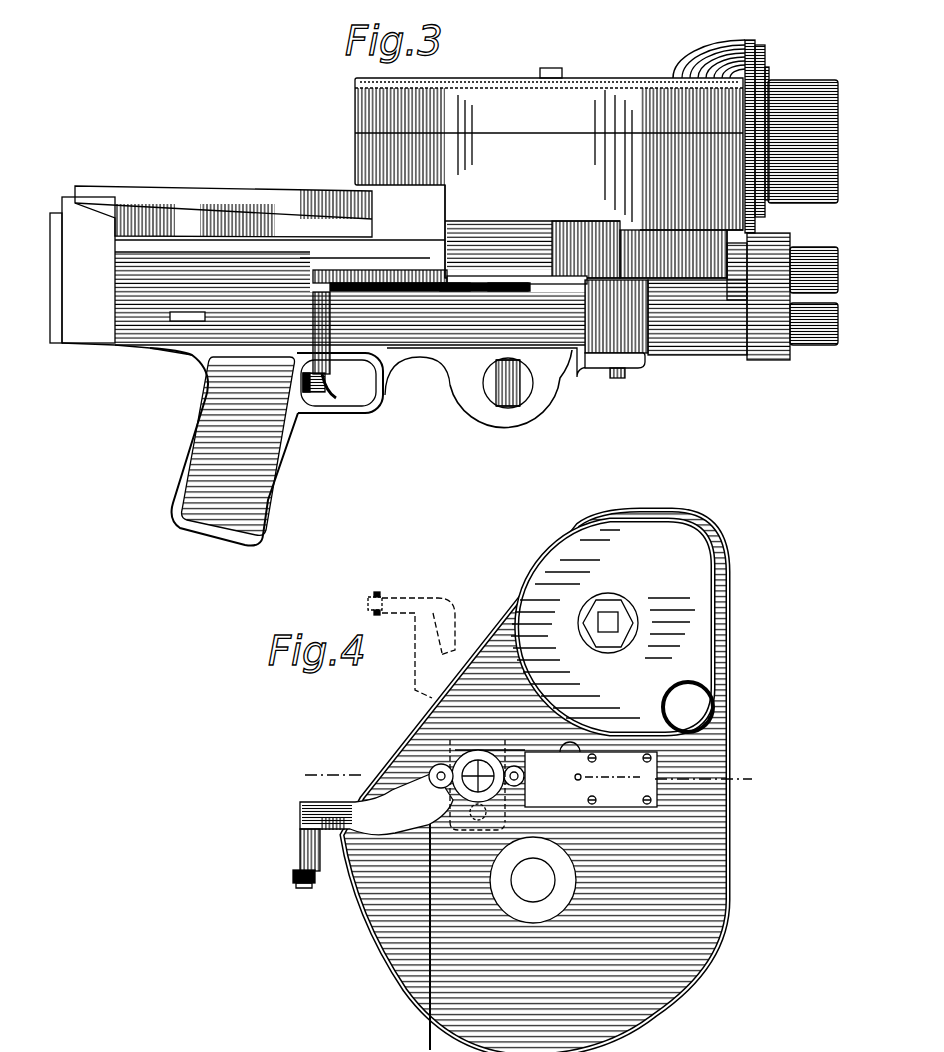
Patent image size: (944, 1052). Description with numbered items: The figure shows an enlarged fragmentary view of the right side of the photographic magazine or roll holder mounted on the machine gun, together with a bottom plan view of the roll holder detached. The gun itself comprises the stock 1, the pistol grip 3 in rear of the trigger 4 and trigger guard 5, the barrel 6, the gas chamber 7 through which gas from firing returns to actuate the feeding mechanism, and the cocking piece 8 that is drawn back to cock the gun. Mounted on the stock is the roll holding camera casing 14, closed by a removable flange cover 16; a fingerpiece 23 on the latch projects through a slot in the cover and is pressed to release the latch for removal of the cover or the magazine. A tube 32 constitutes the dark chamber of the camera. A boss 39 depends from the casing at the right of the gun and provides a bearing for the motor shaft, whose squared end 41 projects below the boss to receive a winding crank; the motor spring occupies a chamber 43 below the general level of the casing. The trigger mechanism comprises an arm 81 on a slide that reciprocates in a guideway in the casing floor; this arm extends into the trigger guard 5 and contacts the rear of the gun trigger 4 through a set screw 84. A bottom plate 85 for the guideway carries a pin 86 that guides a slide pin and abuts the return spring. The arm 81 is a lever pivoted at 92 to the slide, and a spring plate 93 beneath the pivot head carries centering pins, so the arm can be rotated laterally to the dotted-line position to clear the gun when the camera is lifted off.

In FIG. 3, the stock 1 is at (370, 258).
In FIG. 3, the pistol grip 3 is at (255, 495).
In FIG. 3, the trigger 4 is at (334, 345).
In FIG. 3, the trigger guard 5 is at (344, 393).
In FIG. 3, the barrel 6 is at (806, 252).
In FIG. 3, the gas chamber 7 is at (806, 340).
In FIG. 4, the cocking piece 8 is at (527, 779).
In FIG. 3, the roll holding camera casing 14 is at (420, 253).
In FIG. 4, the roll holding camera casing 14 is at (718, 902).
In FIG. 3, the removable flange cover 16 is at (575, 104).
In FIG. 3, the fingerpiece 23 is at (566, 74).
In FIG. 3, the tube 32 is at (786, 86).
In FIG. 3, the boss 39 is at (616, 324).
In FIG. 3, the squared end 41 is at (616, 378).
In FIG. 4, the squared end 41 is at (612, 622).
In FIG. 3, the chamber 43 is at (639, 249).
In FIG. 4, the chamber 43 is at (612, 636).
In FIG. 3, the arm 81 is at (362, 290).
In FIG. 4, the arm 81 is at (300, 830).
In FIG. 3, the set screw 84 is at (312, 393).
In FIG. 4, the set screw 84 is at (300, 884).
In FIG. 3, the bottom plate 85 is at (566, 284).
In FIG. 4, the bottom plate 85 is at (556, 778).
In FIG. 4, the pin 86 is at (590, 778).
In FIG. 3, the pivot 92 is at (503, 292).
In FIG. 4, the pivot 92 is at (412, 787).
In FIG. 3, the spring plate 93 is at (457, 293).
In FIG. 4, the spring plate 93 is at (429, 774).